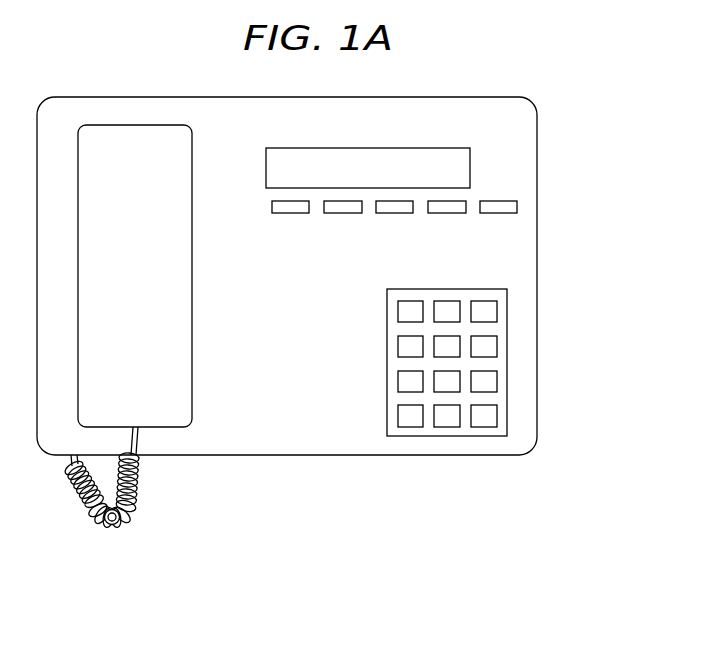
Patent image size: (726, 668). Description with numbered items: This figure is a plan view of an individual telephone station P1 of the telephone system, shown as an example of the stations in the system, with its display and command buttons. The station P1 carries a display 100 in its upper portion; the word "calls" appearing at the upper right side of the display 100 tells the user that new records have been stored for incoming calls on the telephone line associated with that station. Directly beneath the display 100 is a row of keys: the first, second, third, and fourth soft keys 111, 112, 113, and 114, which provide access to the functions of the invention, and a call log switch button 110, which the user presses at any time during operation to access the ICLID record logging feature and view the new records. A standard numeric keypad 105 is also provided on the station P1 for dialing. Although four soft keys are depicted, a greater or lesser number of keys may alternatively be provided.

The telephone station P1 is at (310, 467).
The display 100 is at (374, 148).
The standard numeric keypad 105 is at (507, 328).
The call log switch button 110 is at (503, 213).
The first soft key 111 is at (295, 213).
The second soft key 112 is at (347, 213).
The third soft key 113 is at (399, 213).
The fourth soft key 114 is at (451, 213).